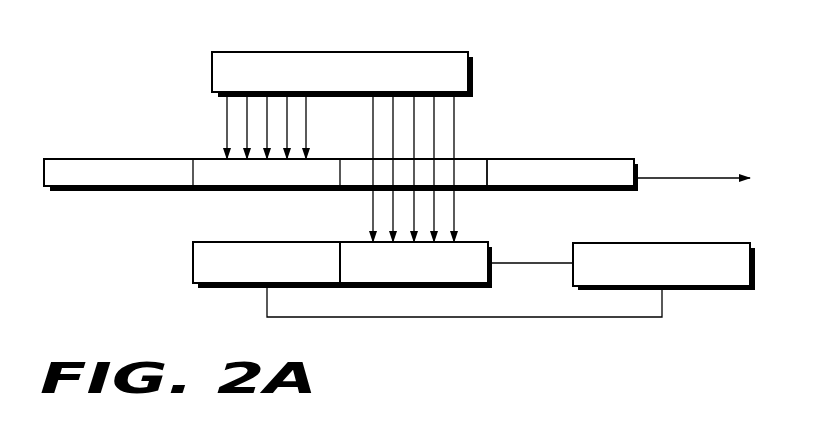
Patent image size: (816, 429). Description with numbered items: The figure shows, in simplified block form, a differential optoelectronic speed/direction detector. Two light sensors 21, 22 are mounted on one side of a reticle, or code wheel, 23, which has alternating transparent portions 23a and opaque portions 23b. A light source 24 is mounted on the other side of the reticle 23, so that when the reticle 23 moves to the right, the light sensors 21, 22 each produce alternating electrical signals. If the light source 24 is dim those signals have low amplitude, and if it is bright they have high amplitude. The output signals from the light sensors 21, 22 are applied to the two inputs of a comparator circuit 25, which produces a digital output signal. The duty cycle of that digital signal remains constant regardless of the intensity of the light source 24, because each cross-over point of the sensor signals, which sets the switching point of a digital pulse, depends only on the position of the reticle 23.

The light sensor 21 is at (219, 287).
The light sensor 22 is at (482, 242).
The reticle 23 is at (110, 155).
The transparent portion 23a is at (477, 170).
The opaque portion 23b is at (623, 170).
The light source 24 is at (248, 50).
The comparator circuit 25 is at (728, 290).